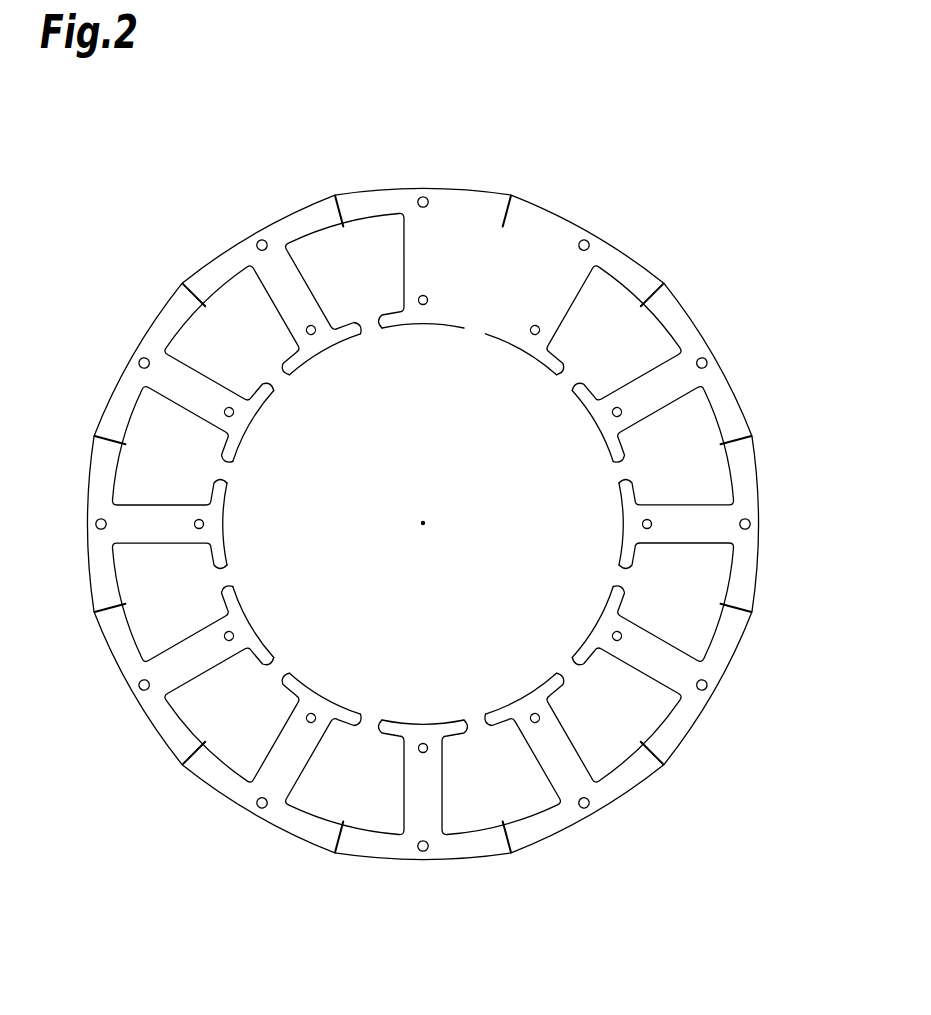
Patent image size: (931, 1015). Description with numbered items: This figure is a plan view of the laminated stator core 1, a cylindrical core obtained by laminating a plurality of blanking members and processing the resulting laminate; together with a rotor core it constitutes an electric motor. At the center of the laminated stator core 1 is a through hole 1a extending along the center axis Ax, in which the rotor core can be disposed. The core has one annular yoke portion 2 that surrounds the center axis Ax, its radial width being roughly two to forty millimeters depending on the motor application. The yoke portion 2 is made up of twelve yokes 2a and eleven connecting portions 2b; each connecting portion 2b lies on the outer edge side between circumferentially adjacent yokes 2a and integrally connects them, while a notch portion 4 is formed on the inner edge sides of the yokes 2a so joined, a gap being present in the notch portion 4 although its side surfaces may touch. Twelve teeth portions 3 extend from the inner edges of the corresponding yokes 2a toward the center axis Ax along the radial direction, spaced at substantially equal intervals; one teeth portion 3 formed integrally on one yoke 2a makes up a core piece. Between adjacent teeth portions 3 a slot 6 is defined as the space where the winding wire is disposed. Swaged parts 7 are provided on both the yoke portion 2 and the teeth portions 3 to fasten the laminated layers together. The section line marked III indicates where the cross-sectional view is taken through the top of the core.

The laminated stator core 1 is at (711, 113).
The through hole 1a is at (582, 468).
The yoke portion 2 is at (422, 550).
The yoke 2a is at (680, 307).
The connecting portion 2b is at (520, 193).
The teeth portion 3 is at (293, 287).
The notch portion 4 is at (203, 292).
The slot 6 is at (146, 438).
The swaged part 7 is at (650, 528).
The center axis Ax is at (424, 520).
The section line III is at (365, 138).